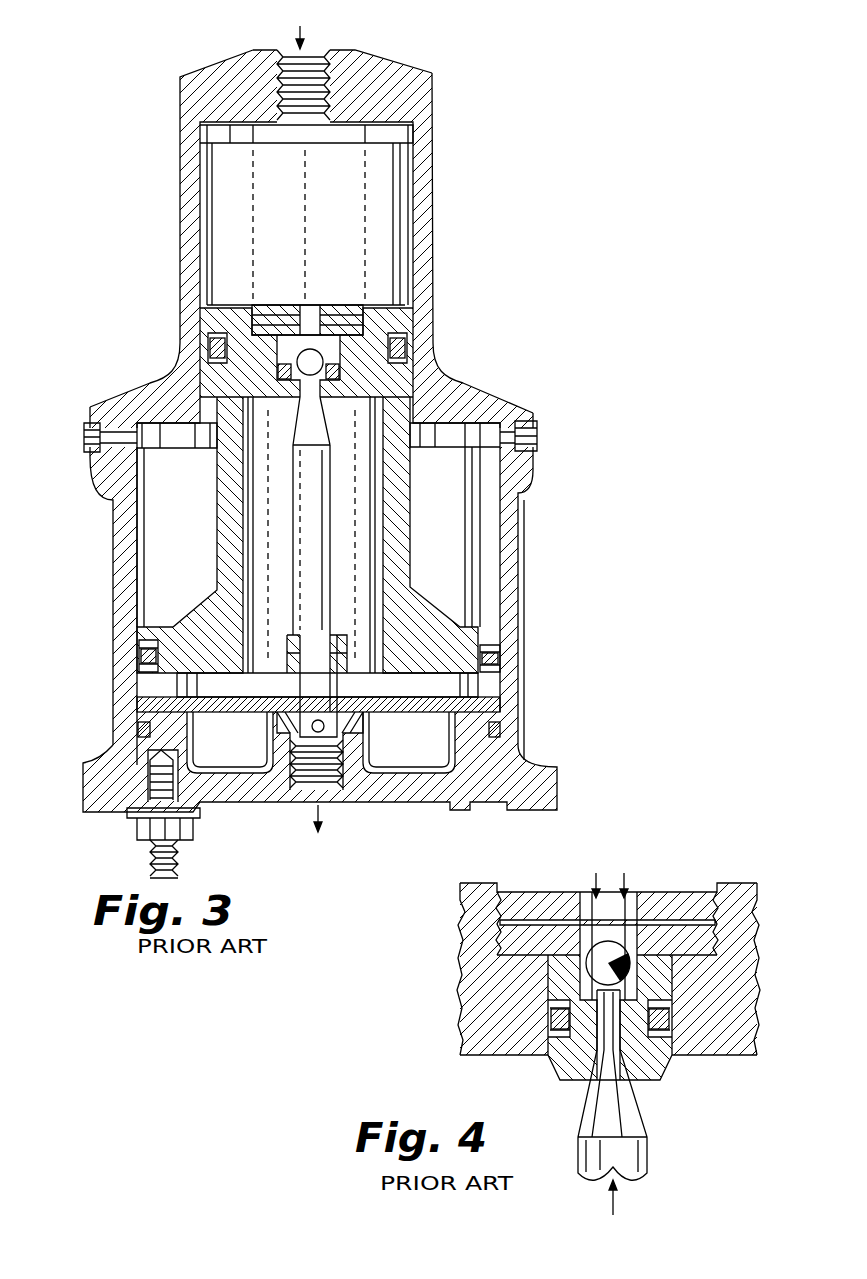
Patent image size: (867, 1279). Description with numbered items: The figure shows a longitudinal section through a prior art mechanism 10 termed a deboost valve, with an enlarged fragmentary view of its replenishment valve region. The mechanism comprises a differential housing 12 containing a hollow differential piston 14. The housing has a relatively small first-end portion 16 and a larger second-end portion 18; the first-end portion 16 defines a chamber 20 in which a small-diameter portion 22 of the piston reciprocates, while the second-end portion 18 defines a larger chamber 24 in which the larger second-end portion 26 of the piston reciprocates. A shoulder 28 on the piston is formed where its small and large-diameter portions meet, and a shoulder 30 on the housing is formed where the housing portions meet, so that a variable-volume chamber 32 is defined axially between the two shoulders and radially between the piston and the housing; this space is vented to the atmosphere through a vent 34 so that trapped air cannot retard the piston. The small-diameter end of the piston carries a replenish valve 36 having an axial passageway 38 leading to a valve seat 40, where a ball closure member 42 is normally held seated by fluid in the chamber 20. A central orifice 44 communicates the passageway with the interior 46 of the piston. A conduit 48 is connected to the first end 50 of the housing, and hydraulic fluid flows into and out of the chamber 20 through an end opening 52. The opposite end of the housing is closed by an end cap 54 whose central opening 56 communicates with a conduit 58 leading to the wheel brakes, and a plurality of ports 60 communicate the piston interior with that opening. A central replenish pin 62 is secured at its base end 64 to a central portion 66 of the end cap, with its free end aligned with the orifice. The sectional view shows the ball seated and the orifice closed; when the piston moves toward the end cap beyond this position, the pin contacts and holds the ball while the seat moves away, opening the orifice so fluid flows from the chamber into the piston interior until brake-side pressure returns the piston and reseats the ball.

In FIG. 3, the mechanism 10 is at (535, 655).
In FIG. 3, the differential housing 12 is at (98, 420).
In FIG. 3, the differential piston 14 is at (215, 533).
In FIG. 3, the first-end portion 16 is at (178, 228).
In FIG. 3, the second-end portion 18 is at (525, 612).
In FIG. 3, the chamber 20 is at (398, 248).
In FIG. 3, the small-diameter portion 22 is at (400, 382).
In FIG. 3, the larger chamber 24 is at (195, 590).
In FIG. 3, the second-end portion 26 is at (480, 690).
In FIG. 3, the shoulder 28 is at (185, 617).
In FIG. 3, the shoulder 30 is at (165, 423).
In FIG. 3, the variable-volume chamber 32 is at (480, 532).
In FIG. 3, the vent 34 is at (541, 437).
In FIG. 3, the replenish valve 36 is at (348, 355).
In FIG. 4, the replenish valve 36 is at (688, 984).
In FIG. 3, the axial passageway 38 is at (312, 305).
In FIG. 4, the axial passageway 38 is at (608, 895).
In FIG. 3, the valve seat 40 is at (292, 388).
In FIG. 4, the valve seat 40 is at (586, 1060).
In FIG. 3, the ball closure member 42 is at (330, 352).
In FIG. 4, the ball closure member 42 is at (626, 955).
In FIG. 3, the central orifice 44 is at (298, 425).
In FIG. 4, the central orifice 44 is at (596, 1076).
In FIG. 3, the interior 46 is at (372, 480).
In FIG. 3, the conduit 48 is at (306, 32).
In FIG. 3, the first end 50 is at (410, 75).
In FIG. 3, the end opening 52 is at (308, 118).
In FIG. 3, the end cap 54 is at (402, 805).
In FIG. 3, the central opening 56 is at (302, 787).
In FIG. 3, the conduit 58 is at (325, 817).
In FIG. 3, the ports 60 is at (270, 740).
In FIG. 3, the replenish pin 62 is at (316, 500).
In FIG. 3, the base end 64 is at (342, 660).
In FIG. 3, the central portion 66 is at (290, 640).